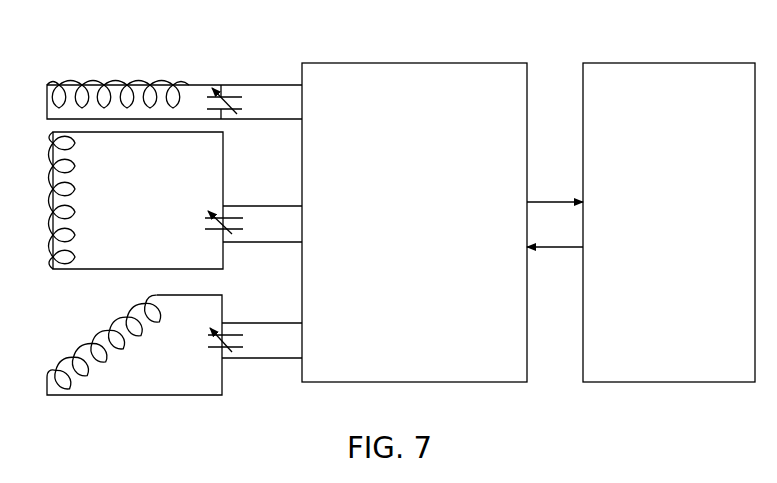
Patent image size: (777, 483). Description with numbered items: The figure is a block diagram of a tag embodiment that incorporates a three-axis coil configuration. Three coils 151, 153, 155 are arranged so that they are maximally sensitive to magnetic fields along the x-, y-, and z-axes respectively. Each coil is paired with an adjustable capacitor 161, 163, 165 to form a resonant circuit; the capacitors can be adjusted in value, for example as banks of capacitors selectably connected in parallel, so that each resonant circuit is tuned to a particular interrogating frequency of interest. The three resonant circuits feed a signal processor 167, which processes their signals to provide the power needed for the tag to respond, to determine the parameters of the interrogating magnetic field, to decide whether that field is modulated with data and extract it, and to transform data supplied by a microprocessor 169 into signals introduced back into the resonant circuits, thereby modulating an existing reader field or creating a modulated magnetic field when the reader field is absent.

The coil 151 is at (118, 323).
The coil 153 is at (133, 85).
The coil 155 is at (75, 217).
The adjustable capacitor 161 is at (217, 347).
The adjustable capacitor 163 is at (232, 97).
The adjustable capacitor 165 is at (222, 217).
The signal processor 167 is at (423, 63).
The microprocessor 169 is at (638, 63).